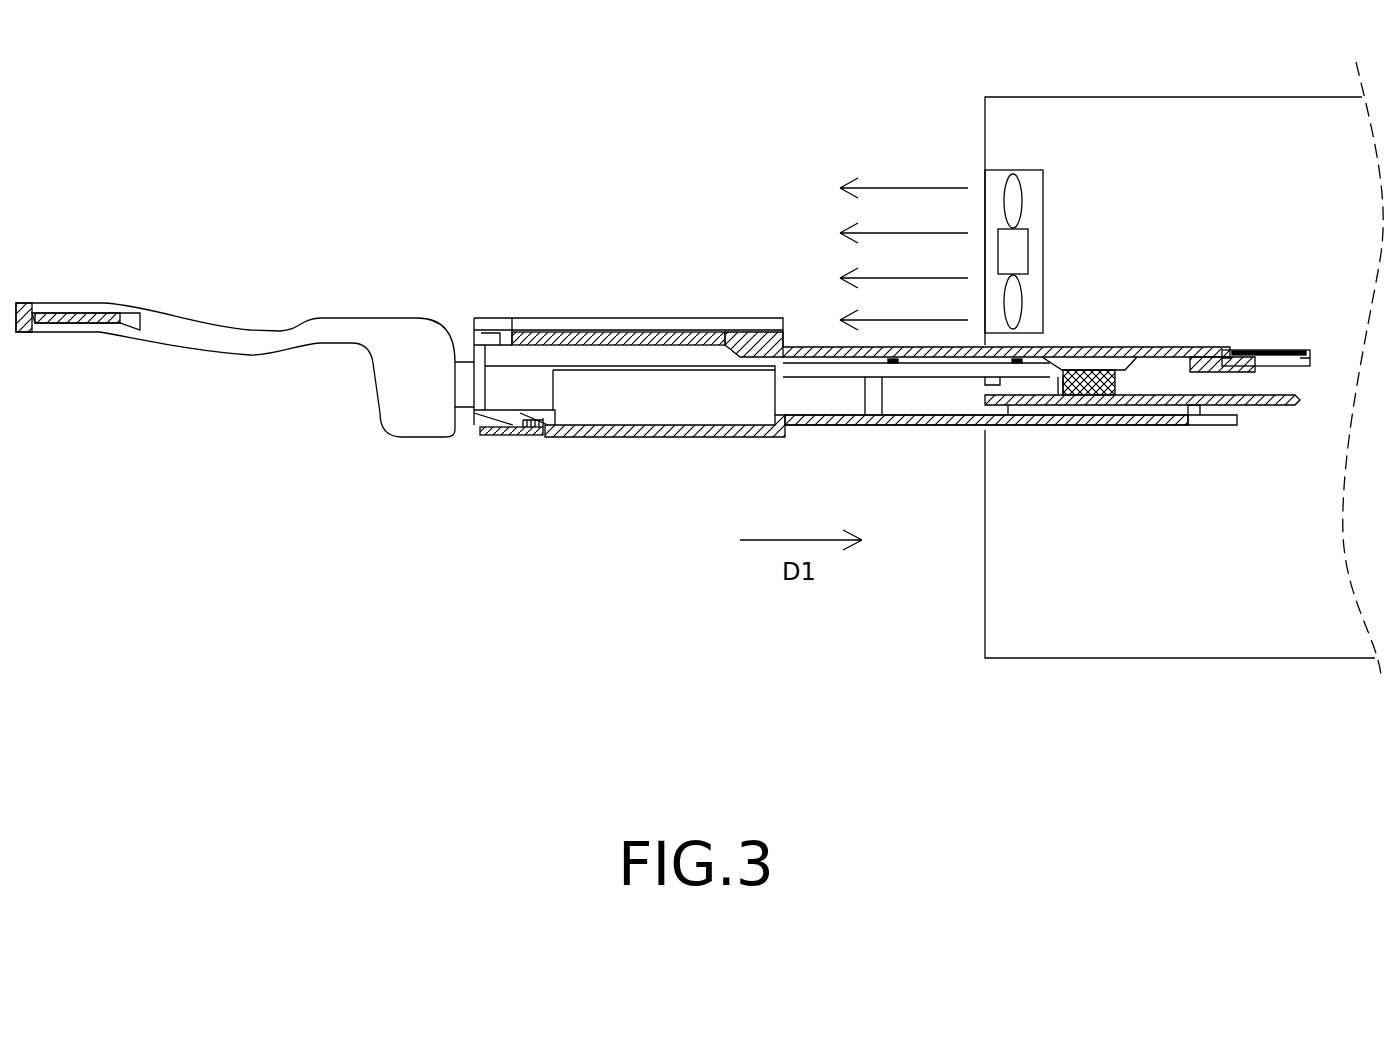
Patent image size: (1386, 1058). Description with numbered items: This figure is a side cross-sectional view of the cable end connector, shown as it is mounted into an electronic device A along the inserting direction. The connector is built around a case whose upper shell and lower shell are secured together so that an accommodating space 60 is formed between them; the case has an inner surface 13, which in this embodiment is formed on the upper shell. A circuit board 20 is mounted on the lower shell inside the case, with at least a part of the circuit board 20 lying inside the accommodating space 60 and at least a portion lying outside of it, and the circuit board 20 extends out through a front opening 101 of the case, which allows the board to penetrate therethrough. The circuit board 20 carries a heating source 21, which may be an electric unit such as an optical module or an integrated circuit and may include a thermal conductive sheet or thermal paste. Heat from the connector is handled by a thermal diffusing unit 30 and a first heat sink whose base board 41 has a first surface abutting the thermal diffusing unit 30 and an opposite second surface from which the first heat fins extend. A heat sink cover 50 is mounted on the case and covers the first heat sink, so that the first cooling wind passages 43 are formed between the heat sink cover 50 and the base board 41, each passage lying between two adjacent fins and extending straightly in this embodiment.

The heat sink cover 50 is at (530, 318).
The first cooling wind passages 43 is at (647, 324).
The base board 41 is at (755, 335).
The thermal diffusing unit 30 is at (632, 347).
The inner surface 13 is at (822, 357).
The accommodating space 60 is at (935, 398).
The heating source 21 is at (1093, 390).
The circuit board 20 is at (1253, 400).
The front opening 101 is at (1197, 390).
The electronic device A is at (1160, 660).